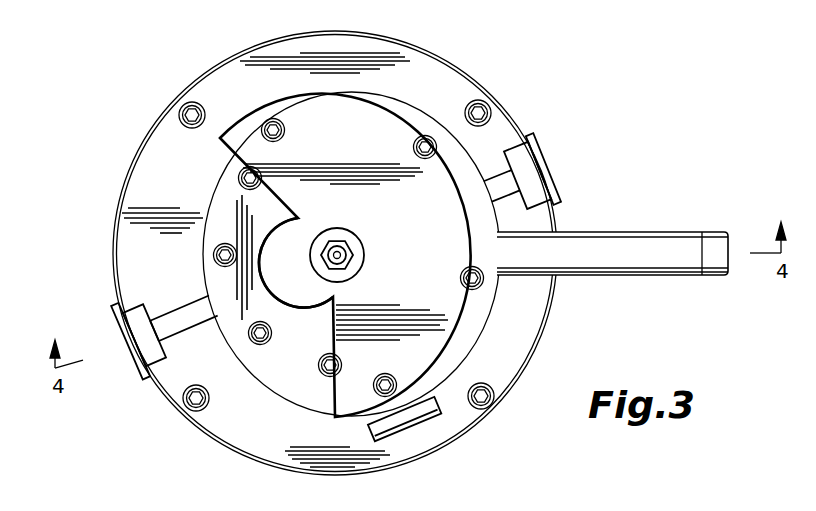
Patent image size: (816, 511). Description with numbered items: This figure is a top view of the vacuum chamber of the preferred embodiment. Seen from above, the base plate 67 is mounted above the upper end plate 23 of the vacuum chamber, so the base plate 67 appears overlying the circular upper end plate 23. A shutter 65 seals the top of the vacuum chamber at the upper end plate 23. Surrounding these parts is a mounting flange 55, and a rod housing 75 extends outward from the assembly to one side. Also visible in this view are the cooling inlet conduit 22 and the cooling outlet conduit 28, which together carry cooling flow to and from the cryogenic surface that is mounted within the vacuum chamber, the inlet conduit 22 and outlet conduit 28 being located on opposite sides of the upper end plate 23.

The mounting flange 55 is at (415, 85).
The upper end plate 23 is at (223, 228).
The base plate 67 is at (438, 241).
The shutter 65 is at (297, 305).
The cooling inlet conduit 22 is at (172, 310).
The cooling outlet conduit 28 is at (523, 167).
The rod housing 75 is at (643, 247).